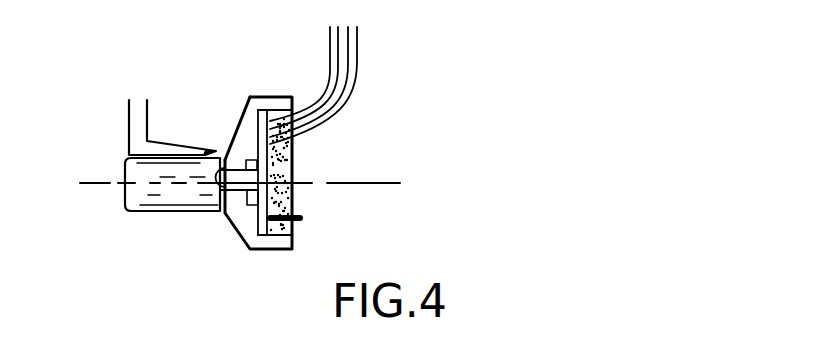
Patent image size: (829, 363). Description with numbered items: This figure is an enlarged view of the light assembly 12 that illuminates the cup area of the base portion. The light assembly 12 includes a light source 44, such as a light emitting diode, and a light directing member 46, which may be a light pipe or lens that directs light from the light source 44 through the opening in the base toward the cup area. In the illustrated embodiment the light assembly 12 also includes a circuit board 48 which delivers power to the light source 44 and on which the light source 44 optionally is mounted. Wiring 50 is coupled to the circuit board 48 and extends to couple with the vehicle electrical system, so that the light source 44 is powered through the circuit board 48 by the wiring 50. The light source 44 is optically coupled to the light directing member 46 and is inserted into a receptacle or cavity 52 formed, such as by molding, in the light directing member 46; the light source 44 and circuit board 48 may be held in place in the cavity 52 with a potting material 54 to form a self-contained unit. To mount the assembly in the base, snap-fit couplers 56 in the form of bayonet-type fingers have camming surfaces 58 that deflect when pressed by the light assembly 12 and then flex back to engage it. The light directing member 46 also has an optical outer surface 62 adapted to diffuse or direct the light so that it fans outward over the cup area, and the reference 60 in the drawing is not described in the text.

The light assembly 12 is at (391, 167).
The light source 44 is at (232, 149).
The light directing member 46 is at (124, 226).
The circuit board 48 is at (313, 218).
The wiring 50 is at (369, 52).
The cavity 52 is at (233, 219).
The potting material 54 is at (316, 148).
The snap-fit coupler 56 is at (175, 146).
The camming surface 58 is at (205, 212).
The contact tip 60 is at (212, 153).
The outer surface 62 is at (101, 186).